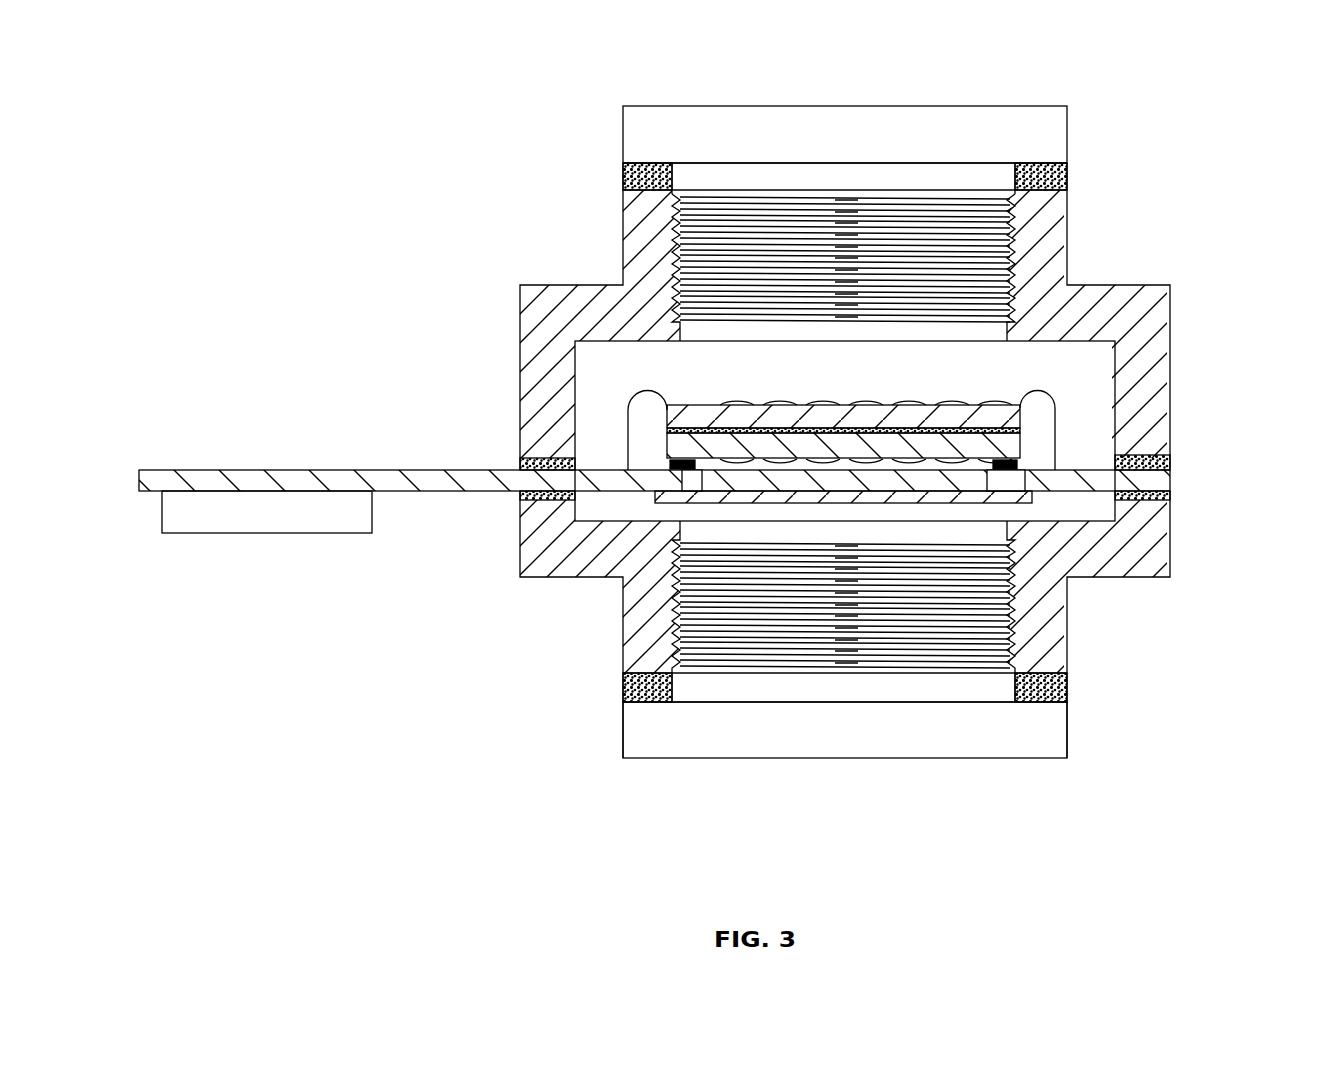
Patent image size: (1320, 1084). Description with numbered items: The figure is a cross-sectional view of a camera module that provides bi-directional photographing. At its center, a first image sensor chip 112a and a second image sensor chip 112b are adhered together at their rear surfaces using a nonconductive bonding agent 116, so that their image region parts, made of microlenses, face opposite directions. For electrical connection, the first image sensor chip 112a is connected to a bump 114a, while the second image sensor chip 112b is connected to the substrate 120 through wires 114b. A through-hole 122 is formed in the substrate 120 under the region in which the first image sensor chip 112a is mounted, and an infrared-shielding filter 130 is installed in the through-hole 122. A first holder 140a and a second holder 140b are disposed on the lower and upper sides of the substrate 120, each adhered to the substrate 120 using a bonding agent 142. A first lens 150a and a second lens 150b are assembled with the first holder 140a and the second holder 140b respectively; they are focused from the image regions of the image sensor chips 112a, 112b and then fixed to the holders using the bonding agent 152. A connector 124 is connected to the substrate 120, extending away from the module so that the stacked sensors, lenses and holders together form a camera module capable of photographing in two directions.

The second lens 150b is at (1050, 130).
The first lens 150a is at (1048, 723).
The bonding agent 152 is at (623, 176).
The second holder 140b is at (1083, 305).
The first holder 140a is at (1077, 575).
The bonding agent 142 is at (520, 462).
The substrate 120 is at (430, 480).
The connector 124 is at (240, 520).
The infrared-shielding filter 130 is at (890, 490).
The second image sensor chip 112b is at (700, 413).
The first image sensor chip 112a is at (685, 445).
The through-hole 122 is at (807, 478).
The wires 114b is at (632, 410).
The bump 114a is at (680, 468).
The nonconductive bonding agent 116 is at (1025, 462).